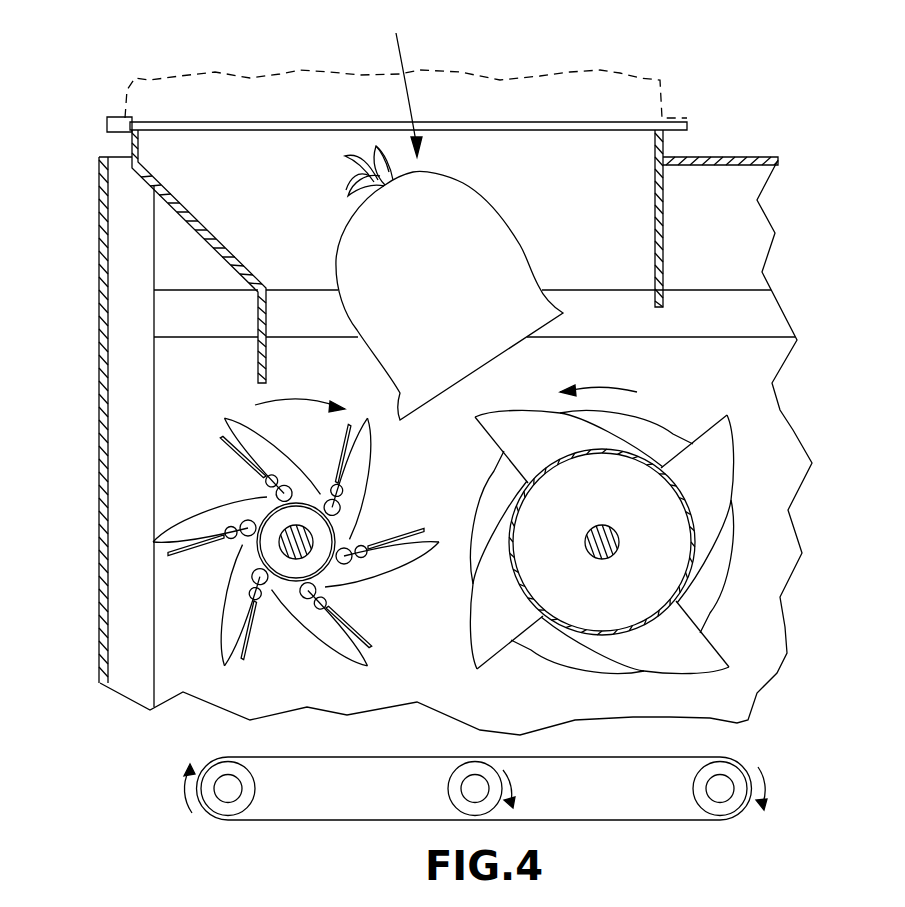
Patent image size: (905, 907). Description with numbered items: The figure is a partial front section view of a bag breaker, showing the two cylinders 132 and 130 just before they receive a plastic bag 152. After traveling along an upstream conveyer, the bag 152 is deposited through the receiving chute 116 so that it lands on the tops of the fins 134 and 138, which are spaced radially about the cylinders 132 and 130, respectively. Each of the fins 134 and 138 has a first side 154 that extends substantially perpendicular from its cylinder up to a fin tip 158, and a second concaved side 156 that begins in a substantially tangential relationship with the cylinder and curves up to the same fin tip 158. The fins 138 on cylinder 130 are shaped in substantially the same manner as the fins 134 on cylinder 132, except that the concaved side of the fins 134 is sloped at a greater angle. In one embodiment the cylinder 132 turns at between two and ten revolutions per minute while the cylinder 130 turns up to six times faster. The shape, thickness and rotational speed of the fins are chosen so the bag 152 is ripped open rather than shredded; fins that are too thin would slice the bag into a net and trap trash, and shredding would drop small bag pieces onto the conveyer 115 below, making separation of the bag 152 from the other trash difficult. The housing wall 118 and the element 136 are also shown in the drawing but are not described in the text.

The conveyer 115 is at (660, 753).
The receiving chute 116 is at (560, 160).
The housing wall 118 is at (99, 360).
The cylinder 130 is at (550, 622).
The cylinder 132 is at (288, 581).
The fins 134 is at (368, 460).
The first rotor blade rod 136 is at (380, 553).
The fins 138 is at (697, 657).
The plastic bag 152 is at (487, 205).
The first side 154 is at (270, 481).
The second concaved side 156 is at (290, 462).
The fin tip 158 is at (225, 419).